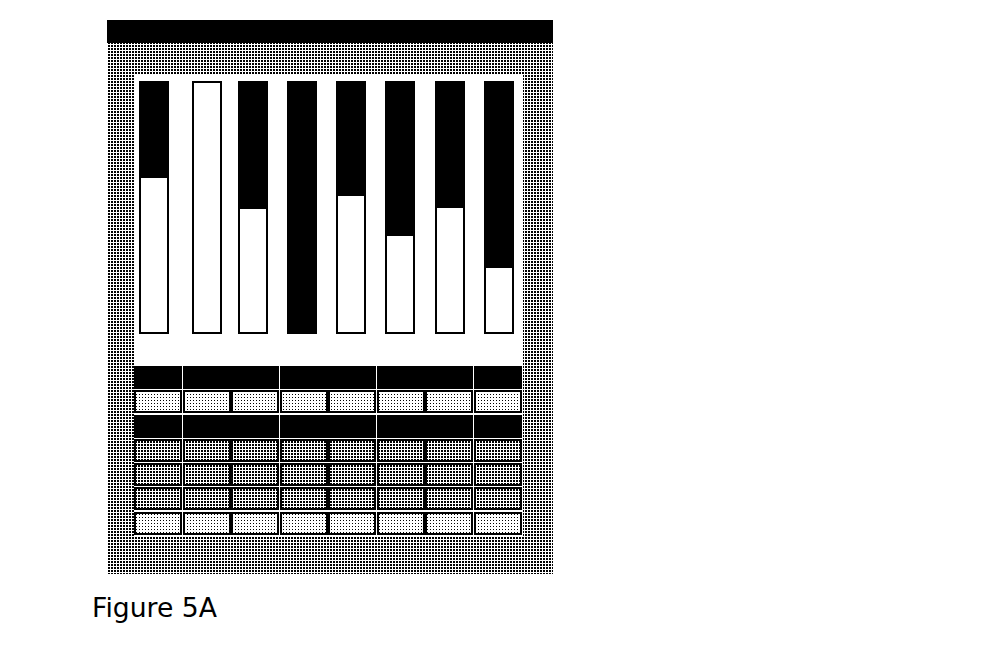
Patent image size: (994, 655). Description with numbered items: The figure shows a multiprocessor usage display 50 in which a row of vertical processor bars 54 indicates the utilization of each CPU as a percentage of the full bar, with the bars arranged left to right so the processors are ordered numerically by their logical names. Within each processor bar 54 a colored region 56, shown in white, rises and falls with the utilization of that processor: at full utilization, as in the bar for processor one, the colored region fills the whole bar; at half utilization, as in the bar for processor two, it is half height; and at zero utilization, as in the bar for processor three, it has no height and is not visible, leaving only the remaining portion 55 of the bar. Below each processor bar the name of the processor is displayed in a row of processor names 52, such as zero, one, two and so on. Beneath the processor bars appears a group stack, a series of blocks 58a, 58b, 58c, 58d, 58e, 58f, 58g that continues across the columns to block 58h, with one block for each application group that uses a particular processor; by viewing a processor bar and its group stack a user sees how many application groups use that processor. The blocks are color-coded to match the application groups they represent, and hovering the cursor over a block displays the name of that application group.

The multiprocessor display window 50 is at (578, 486).
The processor identifier labels 52 is at (505, 356).
The processor bar 54 is at (375, 207).
The utilized portion of bar 55 is at (512, 173).
The colored region 56 is at (503, 296).
The block of group stack 58a is at (137, 378).
The block of group stack 58b is at (137, 400).
The block of group stack 58c is at (137, 430).
The block of group stack 58d is at (137, 455).
The block of group stack 58e is at (137, 478).
The block of group stack 58f is at (137, 500).
The block of group stack 58g is at (137, 524).
The status indicator cell 58h is at (522, 430).